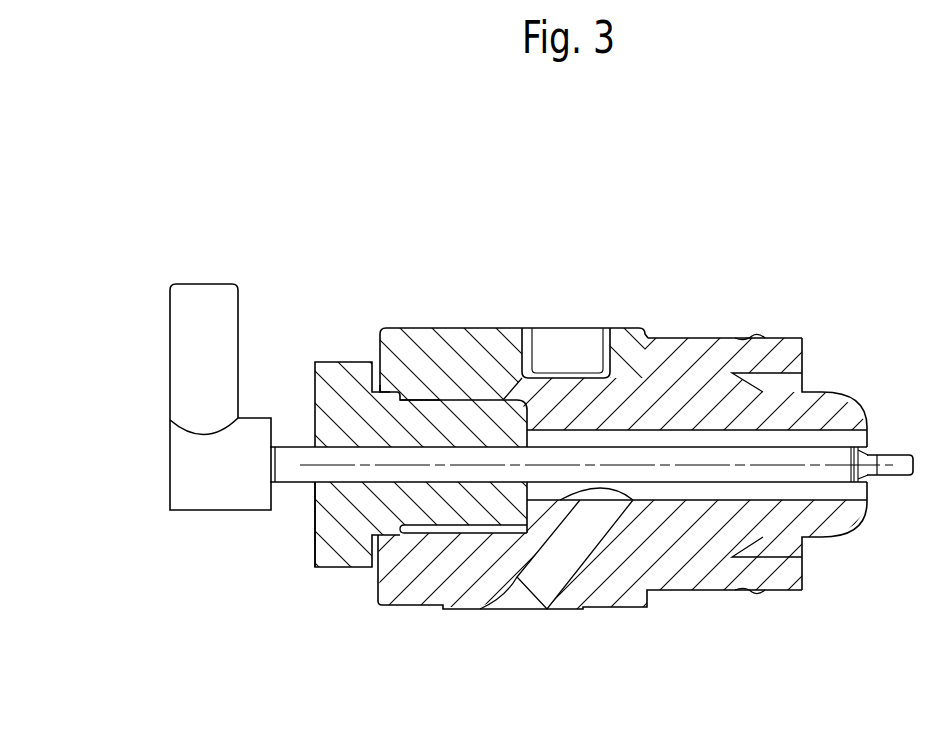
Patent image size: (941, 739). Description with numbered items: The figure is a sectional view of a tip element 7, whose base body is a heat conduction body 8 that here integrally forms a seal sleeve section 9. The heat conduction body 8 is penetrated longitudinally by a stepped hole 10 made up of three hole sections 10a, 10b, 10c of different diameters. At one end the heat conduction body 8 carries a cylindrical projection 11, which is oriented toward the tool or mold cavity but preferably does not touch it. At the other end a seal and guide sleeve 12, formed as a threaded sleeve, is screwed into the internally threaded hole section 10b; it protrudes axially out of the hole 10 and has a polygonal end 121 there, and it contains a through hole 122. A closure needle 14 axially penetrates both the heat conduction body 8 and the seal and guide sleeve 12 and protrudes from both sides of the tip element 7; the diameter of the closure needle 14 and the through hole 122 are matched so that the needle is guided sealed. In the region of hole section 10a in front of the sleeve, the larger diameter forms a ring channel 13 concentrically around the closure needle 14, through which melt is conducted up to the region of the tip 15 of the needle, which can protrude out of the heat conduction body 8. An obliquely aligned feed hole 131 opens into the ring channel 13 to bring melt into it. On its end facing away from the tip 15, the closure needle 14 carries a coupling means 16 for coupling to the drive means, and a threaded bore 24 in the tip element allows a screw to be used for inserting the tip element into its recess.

The coupling means 16 is at (195, 380).
The seal and guide sleeve 12 is at (355, 530).
The polygonal end 121 is at (325, 552).
The through hole 122 is at (470, 485).
The heat conduction body 8 is at (472, 343).
The hole section 10c is at (390, 390).
The hole section 10b is at (425, 390).
The threaded bore 24 is at (558, 373).
The tip element 7 is at (685, 337).
The seal sleeve section 9 is at (772, 358).
The hole section 10a is at (693, 428).
The hole 10 is at (612, 447).
The closure needle 14 is at (707, 470).
The ring channel 13 is at (838, 427).
The projection 11 is at (847, 523).
The tip 15 is at (898, 465).
The feed hole 131 is at (567, 550).